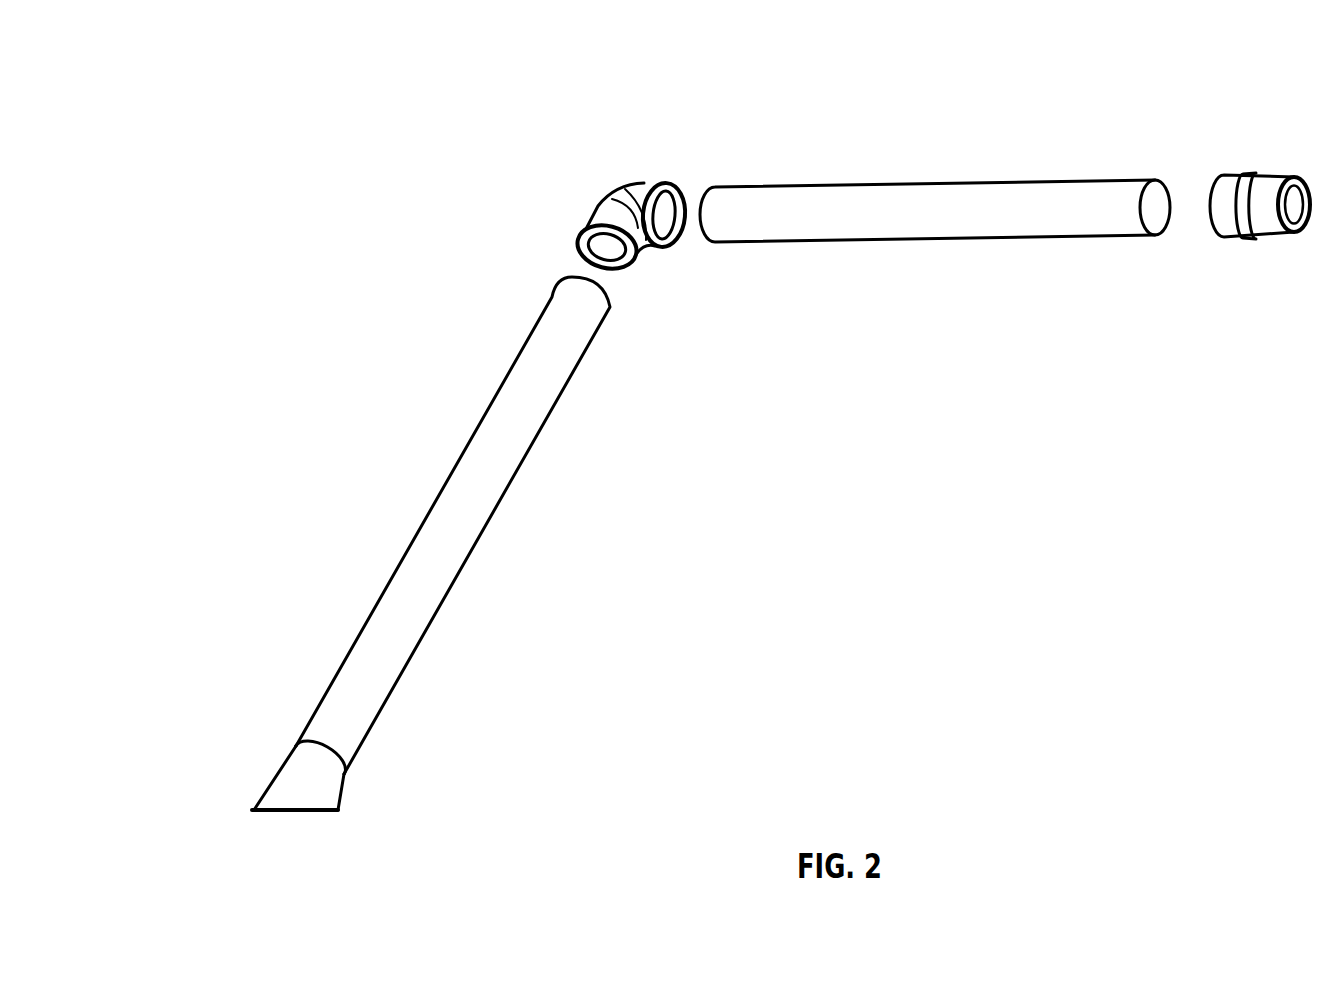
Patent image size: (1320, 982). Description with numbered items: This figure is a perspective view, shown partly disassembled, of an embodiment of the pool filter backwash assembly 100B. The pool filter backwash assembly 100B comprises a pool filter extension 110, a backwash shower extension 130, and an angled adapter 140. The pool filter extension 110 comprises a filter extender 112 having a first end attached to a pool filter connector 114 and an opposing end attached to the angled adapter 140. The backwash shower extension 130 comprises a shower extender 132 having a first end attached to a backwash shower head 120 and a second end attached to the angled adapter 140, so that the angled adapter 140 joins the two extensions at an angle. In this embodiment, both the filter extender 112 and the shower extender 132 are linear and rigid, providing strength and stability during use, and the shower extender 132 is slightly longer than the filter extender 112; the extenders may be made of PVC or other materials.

The pool filter backwash assembly 100B is at (261, 156).
The pool filter extension 110 is at (1313, 140).
The filter extender 112 is at (908, 250).
The pool filter connector 114 is at (1233, 249).
The angled adapter 140 is at (584, 196).
The backwash shower extension 130 is at (527, 253).
The shower extender 132 is at (492, 544).
The backwash shower head 120 is at (352, 791).